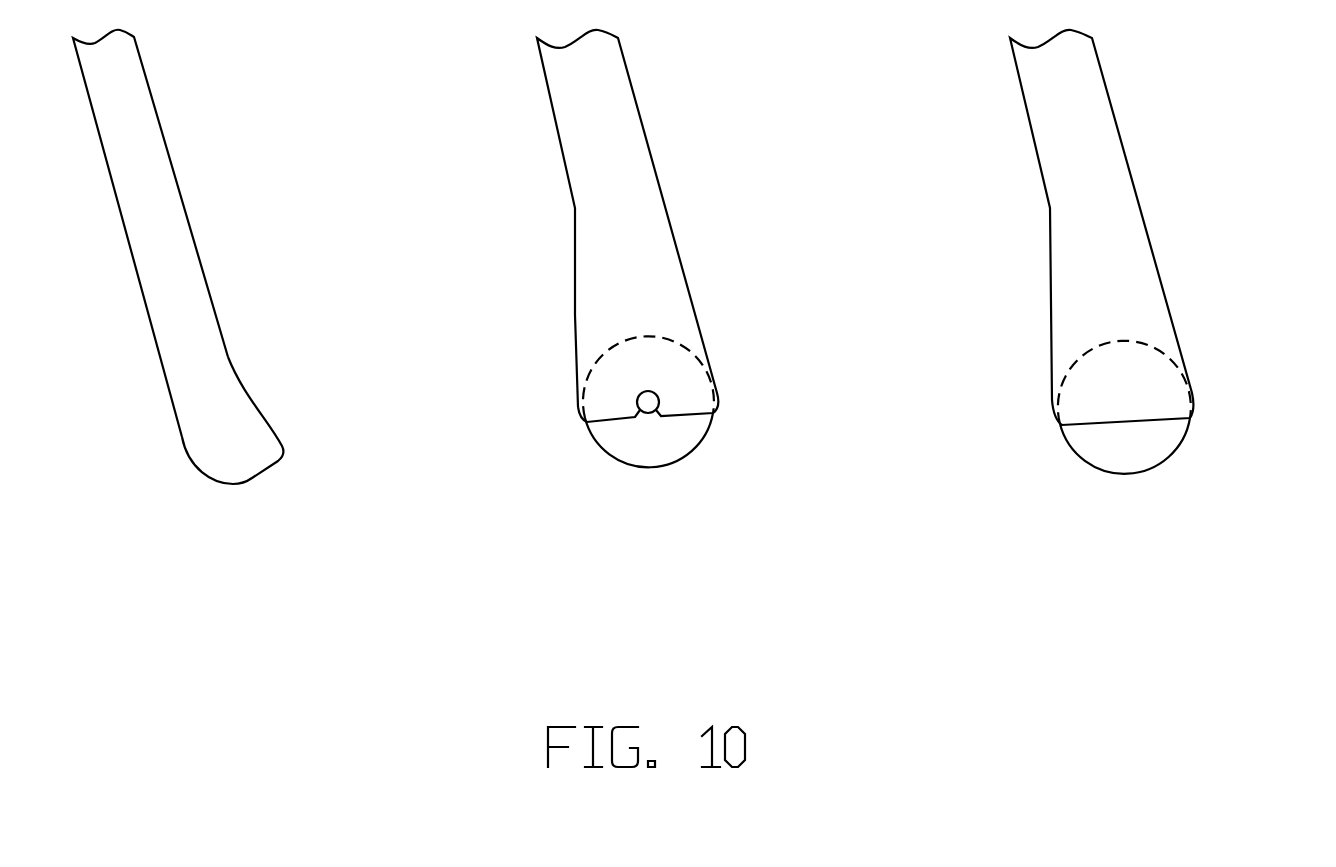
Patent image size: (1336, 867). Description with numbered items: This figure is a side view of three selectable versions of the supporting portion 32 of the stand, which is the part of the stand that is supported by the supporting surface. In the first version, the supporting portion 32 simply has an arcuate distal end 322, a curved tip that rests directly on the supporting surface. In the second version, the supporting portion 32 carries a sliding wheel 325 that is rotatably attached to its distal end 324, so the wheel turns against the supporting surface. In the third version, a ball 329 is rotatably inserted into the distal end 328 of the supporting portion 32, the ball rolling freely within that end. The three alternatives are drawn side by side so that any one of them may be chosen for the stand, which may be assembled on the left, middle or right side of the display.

The supporting portion 32 is at (152, 202).
The arcuate distal end 322 is at (243, 432).
The distal end 324 is at (675, 378).
The sliding wheel 325 is at (675, 438).
The distal end 328 is at (1150, 382).
The ball 329 is at (1150, 442).